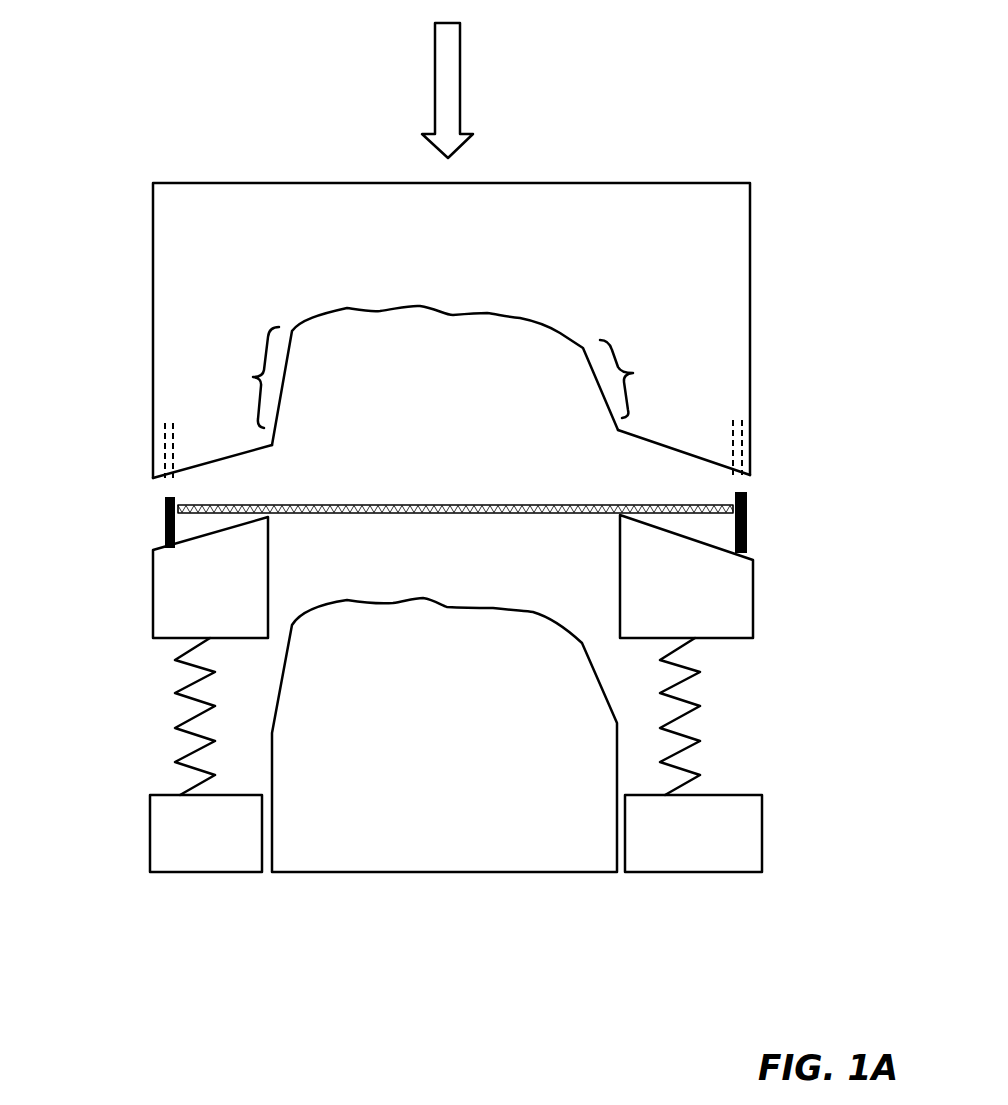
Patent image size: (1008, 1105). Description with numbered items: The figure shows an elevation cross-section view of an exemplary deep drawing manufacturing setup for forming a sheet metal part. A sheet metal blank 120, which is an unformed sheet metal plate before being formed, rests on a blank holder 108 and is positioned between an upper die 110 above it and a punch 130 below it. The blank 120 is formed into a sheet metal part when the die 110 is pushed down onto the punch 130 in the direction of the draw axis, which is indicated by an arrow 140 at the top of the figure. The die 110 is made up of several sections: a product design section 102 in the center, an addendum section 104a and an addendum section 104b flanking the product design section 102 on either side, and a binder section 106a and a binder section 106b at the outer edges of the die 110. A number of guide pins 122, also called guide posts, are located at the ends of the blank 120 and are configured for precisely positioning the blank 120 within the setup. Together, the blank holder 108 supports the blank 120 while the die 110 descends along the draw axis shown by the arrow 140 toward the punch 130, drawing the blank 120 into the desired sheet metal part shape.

The product design section 102 is at (438, 303).
The addendum section 104a is at (250, 372).
The addendum section 104b is at (638, 365).
The binder section 106a is at (228, 455).
The binder section 106b is at (678, 453).
The blank holder 108 is at (184, 620).
The upper die 110 is at (204, 235).
The sheet metal blank 120 is at (450, 515).
The guide pins 122 is at (162, 530).
The punch 130 is at (427, 779).
The arrow 140 is at (457, 107).